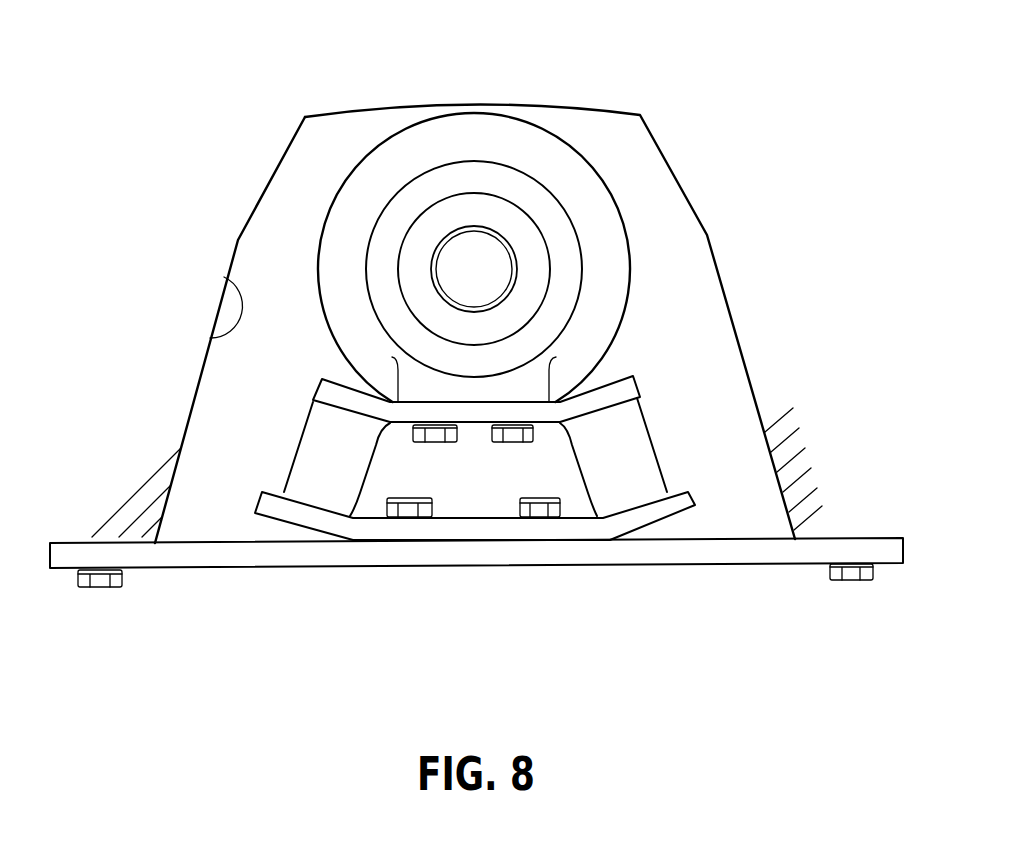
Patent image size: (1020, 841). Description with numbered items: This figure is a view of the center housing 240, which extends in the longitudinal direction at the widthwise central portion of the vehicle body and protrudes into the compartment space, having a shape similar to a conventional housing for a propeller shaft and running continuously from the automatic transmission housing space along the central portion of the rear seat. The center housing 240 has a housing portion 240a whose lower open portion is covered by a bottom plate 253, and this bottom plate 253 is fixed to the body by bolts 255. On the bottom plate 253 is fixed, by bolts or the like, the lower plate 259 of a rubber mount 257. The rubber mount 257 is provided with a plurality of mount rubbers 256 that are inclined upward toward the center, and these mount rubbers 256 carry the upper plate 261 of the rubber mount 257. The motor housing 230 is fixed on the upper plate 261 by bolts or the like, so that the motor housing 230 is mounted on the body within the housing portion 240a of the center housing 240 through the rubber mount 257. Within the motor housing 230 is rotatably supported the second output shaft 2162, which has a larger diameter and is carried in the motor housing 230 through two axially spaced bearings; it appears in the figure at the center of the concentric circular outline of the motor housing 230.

The motor housing 230 is at (563, 137).
The center housing 240 is at (665, 153).
The housing portion 240a is at (205, 338).
The second output shaft 2162 is at (482, 280).
The upper plate 261 is at (614, 375).
The rubber mount 257 is at (519, 480).
The mount rubbers 256 is at (302, 436).
The lower plate 259 is at (660, 523).
The bottom plate 253 is at (768, 553).
The bolts 255 is at (97, 590).